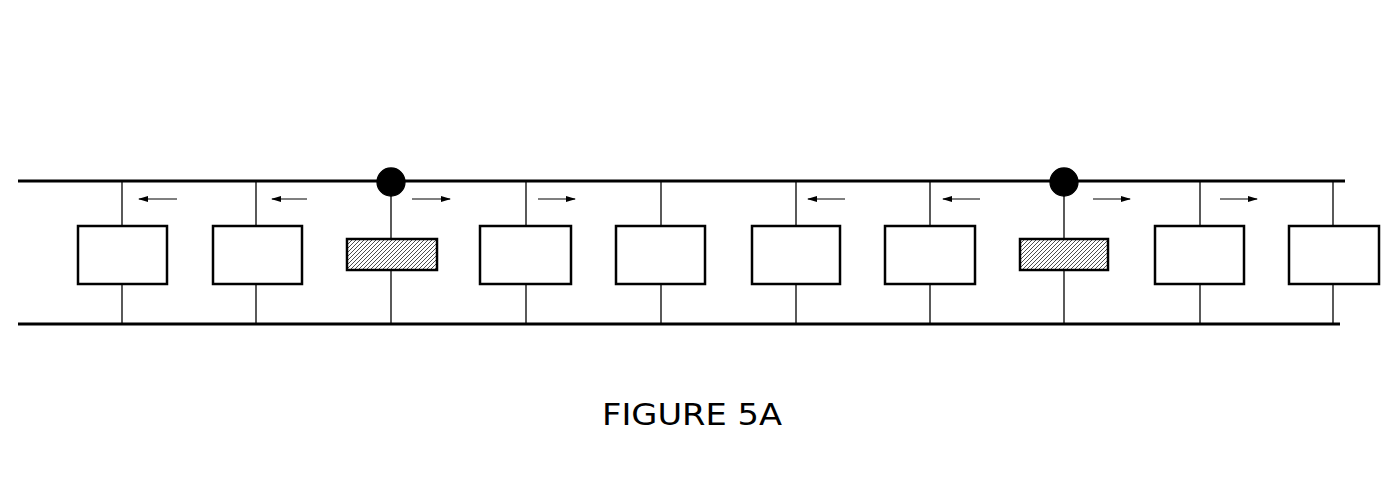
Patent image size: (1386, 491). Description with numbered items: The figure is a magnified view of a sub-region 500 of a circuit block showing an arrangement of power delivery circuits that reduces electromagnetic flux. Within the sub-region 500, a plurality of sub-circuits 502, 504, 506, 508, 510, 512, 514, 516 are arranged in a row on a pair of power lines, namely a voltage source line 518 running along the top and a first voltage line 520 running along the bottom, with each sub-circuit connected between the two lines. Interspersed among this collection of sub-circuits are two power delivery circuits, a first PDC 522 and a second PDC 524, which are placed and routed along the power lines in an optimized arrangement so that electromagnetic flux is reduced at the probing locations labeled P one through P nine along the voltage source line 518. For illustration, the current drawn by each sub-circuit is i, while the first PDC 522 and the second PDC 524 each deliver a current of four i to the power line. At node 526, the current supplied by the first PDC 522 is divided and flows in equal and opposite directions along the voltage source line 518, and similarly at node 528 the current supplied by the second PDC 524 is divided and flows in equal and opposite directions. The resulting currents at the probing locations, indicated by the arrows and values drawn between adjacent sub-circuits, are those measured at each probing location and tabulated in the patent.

The sub-region 500 is at (693, 223).
The sub-circuit 502 is at (122, 252).
The sub-circuit 504 is at (257, 252).
The sub-circuit 506 is at (525, 252).
The sub-circuit 508 is at (660, 252).
The sub-circuit 510 is at (796, 252).
The sub-circuit 512 is at (930, 252).
The sub-circuit 514 is at (1199, 252).
The sub-circuit 516 is at (1334, 252).
The voltage source line 518 is at (106, 181).
The first voltage line 520 is at (191, 326).
The PDC_1 522 is at (392, 252).
The PDC_2 524 is at (1064, 252).
The node 526 is at (392, 163).
The node 528 is at (1065, 165).